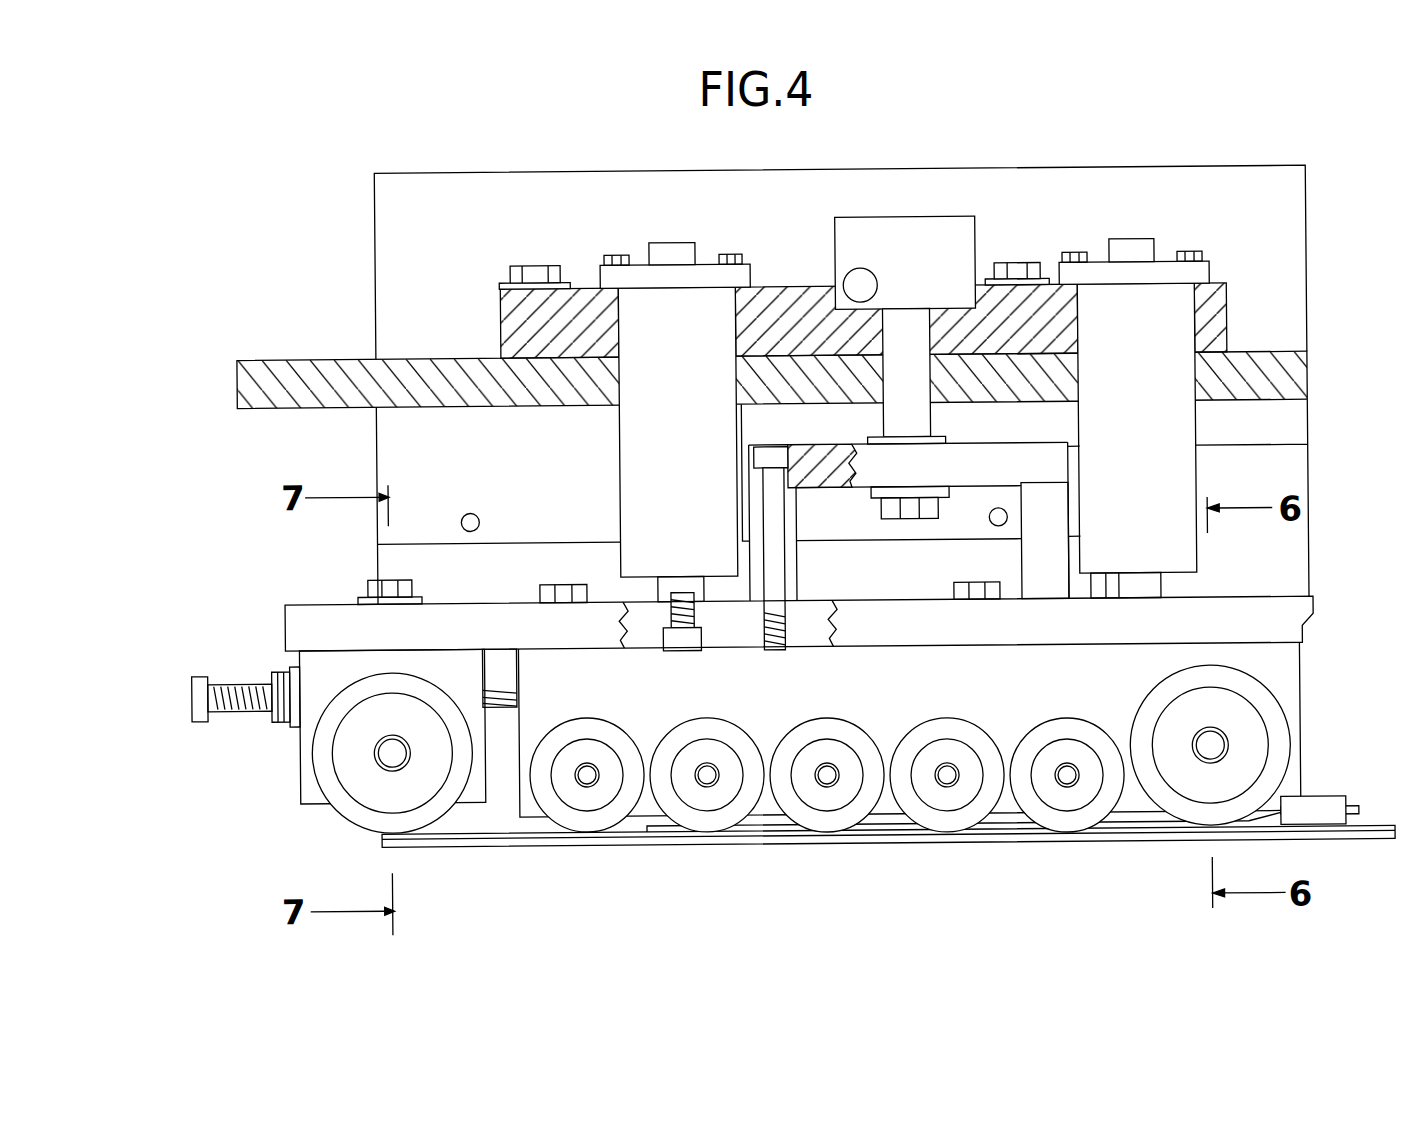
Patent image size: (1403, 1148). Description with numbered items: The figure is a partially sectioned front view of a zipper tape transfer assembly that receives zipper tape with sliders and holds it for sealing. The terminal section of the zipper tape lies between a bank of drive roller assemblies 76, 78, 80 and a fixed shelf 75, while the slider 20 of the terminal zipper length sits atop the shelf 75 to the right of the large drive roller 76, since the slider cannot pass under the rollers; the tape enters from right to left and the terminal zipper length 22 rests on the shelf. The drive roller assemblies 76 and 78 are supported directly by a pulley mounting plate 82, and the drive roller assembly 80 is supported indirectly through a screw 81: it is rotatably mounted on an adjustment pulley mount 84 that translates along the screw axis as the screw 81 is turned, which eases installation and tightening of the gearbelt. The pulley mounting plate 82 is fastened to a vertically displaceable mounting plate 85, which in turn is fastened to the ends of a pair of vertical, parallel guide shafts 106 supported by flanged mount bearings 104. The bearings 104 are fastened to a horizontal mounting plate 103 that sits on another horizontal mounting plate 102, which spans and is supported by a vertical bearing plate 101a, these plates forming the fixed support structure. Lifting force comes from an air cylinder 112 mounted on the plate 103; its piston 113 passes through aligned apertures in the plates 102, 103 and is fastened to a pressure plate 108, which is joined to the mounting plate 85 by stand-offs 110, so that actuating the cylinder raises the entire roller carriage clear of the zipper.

The vertical bearing plate 101a is at (378, 174).
The horizontal mounting plate 102 is at (242, 392).
The horizontal mounting plate 103 is at (505, 322).
The flanged mount bearing 104 is at (634, 483).
The guide shaft 106 is at (686, 247).
The pressure plate 108 is at (1030, 448).
The stand-off 110 is at (740, 564).
The air cylinder 112 is at (927, 240).
The piston 113 is at (920, 422).
The mounting plate 85 is at (1293, 614).
The adjustment pulley mount 84 is at (297, 765).
The screw 81 is at (200, 676).
The pulley mounting plate 82 is at (1302, 666).
The slider 20 is at (1315, 804).
The plate 22 is at (893, 838).
The fixed shelf 75 is at (494, 850).
The drive roller assembly 80 is at (346, 818).
The drive roller assemblies 78 is at (955, 726).
The large drive roller 76 is at (1275, 699).